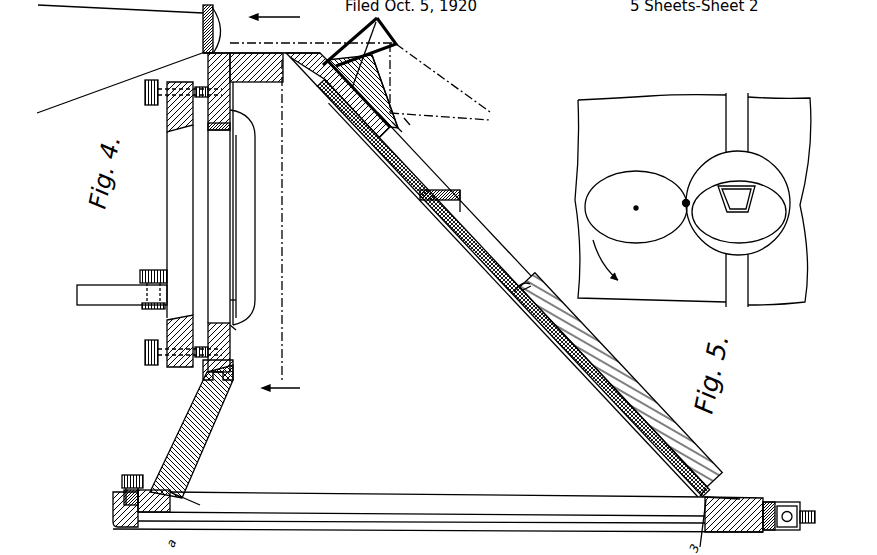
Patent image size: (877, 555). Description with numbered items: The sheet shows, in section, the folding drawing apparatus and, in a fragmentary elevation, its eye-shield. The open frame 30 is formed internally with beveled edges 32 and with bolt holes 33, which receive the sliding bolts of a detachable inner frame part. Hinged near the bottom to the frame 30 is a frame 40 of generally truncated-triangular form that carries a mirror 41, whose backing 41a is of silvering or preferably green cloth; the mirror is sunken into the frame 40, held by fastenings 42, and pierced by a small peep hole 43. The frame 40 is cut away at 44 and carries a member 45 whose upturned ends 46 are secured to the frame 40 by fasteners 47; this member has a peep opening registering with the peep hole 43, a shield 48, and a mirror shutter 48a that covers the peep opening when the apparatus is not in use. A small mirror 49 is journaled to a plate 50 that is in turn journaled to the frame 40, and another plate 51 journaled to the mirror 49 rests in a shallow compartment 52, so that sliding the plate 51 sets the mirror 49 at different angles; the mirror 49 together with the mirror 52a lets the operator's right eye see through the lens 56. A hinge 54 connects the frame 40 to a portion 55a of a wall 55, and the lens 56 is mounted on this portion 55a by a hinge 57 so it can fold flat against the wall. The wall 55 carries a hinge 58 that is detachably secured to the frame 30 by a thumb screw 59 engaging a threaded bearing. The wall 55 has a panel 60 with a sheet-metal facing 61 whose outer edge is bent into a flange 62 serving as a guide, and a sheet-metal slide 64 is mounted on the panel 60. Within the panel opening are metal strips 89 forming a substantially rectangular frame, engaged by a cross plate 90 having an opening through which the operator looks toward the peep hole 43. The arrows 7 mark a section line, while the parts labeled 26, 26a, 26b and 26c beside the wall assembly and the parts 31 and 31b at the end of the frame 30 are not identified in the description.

In FIG. 4, the section line 7- 7 is at (275, 212).
In FIG. 4, the adjusting lever 26 is at (92, 298).
In FIG. 4, the plate 26a is at (168, 118).
In FIG. 4, the plate 26b is at (168, 175).
In FIG. 4, the clamping screw 26c is at (146, 96).
In FIG. 4, the frame 30 is at (112, 518).
In FIG. 4, the adjusting screw 31 is at (802, 510).
In FIG. 4, the screw housing 31b is at (768, 500).
In FIG. 4, the beveled edges 32 is at (180, 495).
In FIG. 4, the bolt holes 33 is at (195, 505).
In FIG. 4, the frame 40 is at (640, 340).
In FIG. 4, the mirror 41 is at (560, 345).
In FIG. 5, the mirror 41 is at (594, 138).
In FIG. 4, the backing 41a is at (620, 420).
In FIG. 4, the fastenings 42 is at (315, 92).
In FIG. 4, the peep hole 43 is at (448, 238).
In FIG. 5, the peep hole 43 is at (736, 199).
In FIG. 4, the cut-away portion 44 is at (430, 170).
In FIG. 4, the member 45 is at (492, 240).
In FIG. 5, the member 45 is at (730, 138).
In FIG. 4, the upturned ends 46 is at (404, 130).
In FIG. 4, the fasteners 47 is at (398, 145).
In FIG. 4, the shield 48 is at (460, 194).
In FIG. 5, the shield 48 is at (712, 165).
In FIG. 5, the mirror shutter 48a is at (640, 178).
In FIG. 4, the small mirror 49 is at (396, 42).
In FIG. 4, the plate 50 is at (350, 63).
In FIG. 4, the plate 51 is at (350, 53).
In FIG. 4, the shallow compartment 52 is at (386, 98).
In FIG. 4, the mirror 52a is at (398, 110).
In FIG. 4, the hinge 54 is at (302, 78).
In FIG. 4, the wall 55 is at (192, 412).
In FIG. 4, the wall portion 55a is at (248, 100).
In FIG. 4, the lens 56 is at (203, 28).
In FIG. 4, the hinge 57 is at (221, 40).
In FIG. 4, the hinge 58 is at (152, 488).
In FIG. 4, the thumb screw 59 is at (126, 474).
In FIG. 4, the panel 60 is at (236, 330).
In FIG. 4, the facing 61 is at (256, 122).
In FIG. 4, the flange 62 is at (233, 95).
In FIG. 4, the slide 64 is at (244, 372).
In FIG. 4, the metal strip 89 is at (234, 216).
In FIG. 4, the cross plate 90 is at (236, 300).